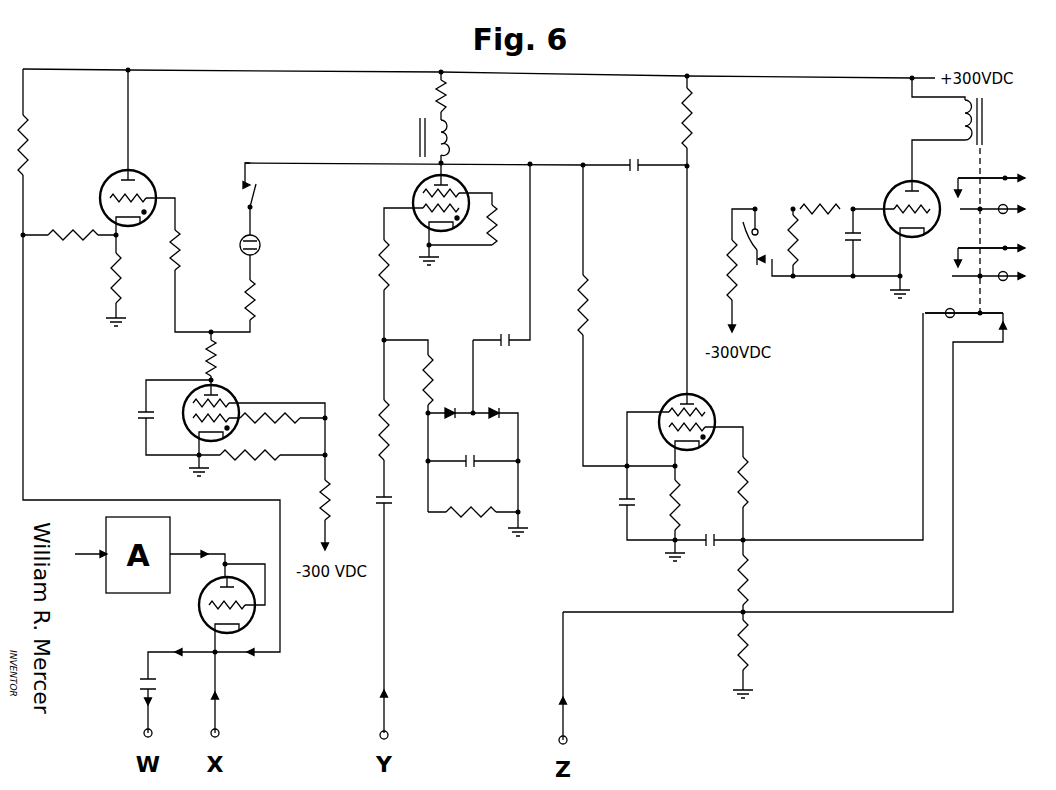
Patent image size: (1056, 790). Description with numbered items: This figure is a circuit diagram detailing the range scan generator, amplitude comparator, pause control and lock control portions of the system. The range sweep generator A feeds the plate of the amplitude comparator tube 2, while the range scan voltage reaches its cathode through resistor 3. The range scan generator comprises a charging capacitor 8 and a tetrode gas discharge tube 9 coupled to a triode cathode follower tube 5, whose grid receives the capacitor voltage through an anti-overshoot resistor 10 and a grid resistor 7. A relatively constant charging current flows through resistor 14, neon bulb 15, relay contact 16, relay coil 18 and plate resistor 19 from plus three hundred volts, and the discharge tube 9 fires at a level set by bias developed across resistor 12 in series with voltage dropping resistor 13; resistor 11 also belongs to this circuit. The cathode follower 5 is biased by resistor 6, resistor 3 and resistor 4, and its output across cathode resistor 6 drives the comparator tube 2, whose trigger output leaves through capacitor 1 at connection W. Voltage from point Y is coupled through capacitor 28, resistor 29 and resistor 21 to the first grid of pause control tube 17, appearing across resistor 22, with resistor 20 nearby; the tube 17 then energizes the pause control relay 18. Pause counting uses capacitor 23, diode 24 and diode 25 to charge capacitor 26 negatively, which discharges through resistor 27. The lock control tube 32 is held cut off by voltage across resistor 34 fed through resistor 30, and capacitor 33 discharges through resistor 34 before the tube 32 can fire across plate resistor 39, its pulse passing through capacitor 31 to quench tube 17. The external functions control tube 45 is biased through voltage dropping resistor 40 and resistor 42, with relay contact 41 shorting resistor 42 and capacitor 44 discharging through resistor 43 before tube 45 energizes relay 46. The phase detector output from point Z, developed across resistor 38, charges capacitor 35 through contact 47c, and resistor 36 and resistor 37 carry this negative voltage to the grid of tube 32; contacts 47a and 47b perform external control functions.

The capacitor 1 is at (136, 683).
The amplitude comparator tube 2 is at (200, 614).
The resistor 3 is at (73, 247).
The resistor 4 is at (28, 150).
The cathode follower tube 5 is at (145, 173).
The cathode resistor 6 is at (121, 272).
The grid resistor 7 is at (179, 246).
The charging capacitor 8 is at (140, 415).
The tetrode gas discharge tube 9 is at (230, 397).
The anti-overshoot resistor 10 is at (216, 357).
The resistor 11 is at (272, 425).
The resistor 12 is at (258, 464).
The voltage dropping resistor 13 is at (329, 493).
The resistor 14 is at (258, 297).
The neon bulb 15 is at (261, 250).
The relay contact 16 is at (256, 202).
The pause control tube 17 is at (413, 190).
The pause control relay coil 18 is at (449, 138).
The plate resistor 19 is at (447, 98).
The resistor 20 is at (497, 222).
The resistor 21 is at (389, 271).
The resistor 22 is at (422, 376).
The capacitor 23 is at (509, 355).
The diode 24 is at (447, 424).
The diode 25 is at (491, 424).
The capacitor 26 is at (474, 473).
The resistor 27 is at (471, 524).
The capacitor 28 is at (391, 507).
The resistor 29 is at (389, 434).
The resistor 30 is at (589, 301).
The capacitor 31 is at (633, 179).
The lock control tube 32 is at (670, 400).
The capacitor 33 is at (618, 502).
The resistor 34 is at (670, 500).
The capacitor 35 is at (712, 527).
The resistor 36 is at (750, 477).
The resistor 37 is at (750, 575).
The resistor 38 is at (750, 640).
The plate resistor 39 is at (692, 120).
The voltage dropping resistor 40 is at (728, 258).
The relay contact 41 is at (746, 230).
The resistor 42 is at (783, 240).
The resistor 43 is at (826, 206).
The capacitor 44 is at (840, 237).
The external functions control tube 45 is at (897, 185).
The external functions control relay 46 is at (962, 126).
The relay contact 47a is at (958, 178).
The relay contact 47b is at (966, 248).
The relay contact 47c is at (967, 313).